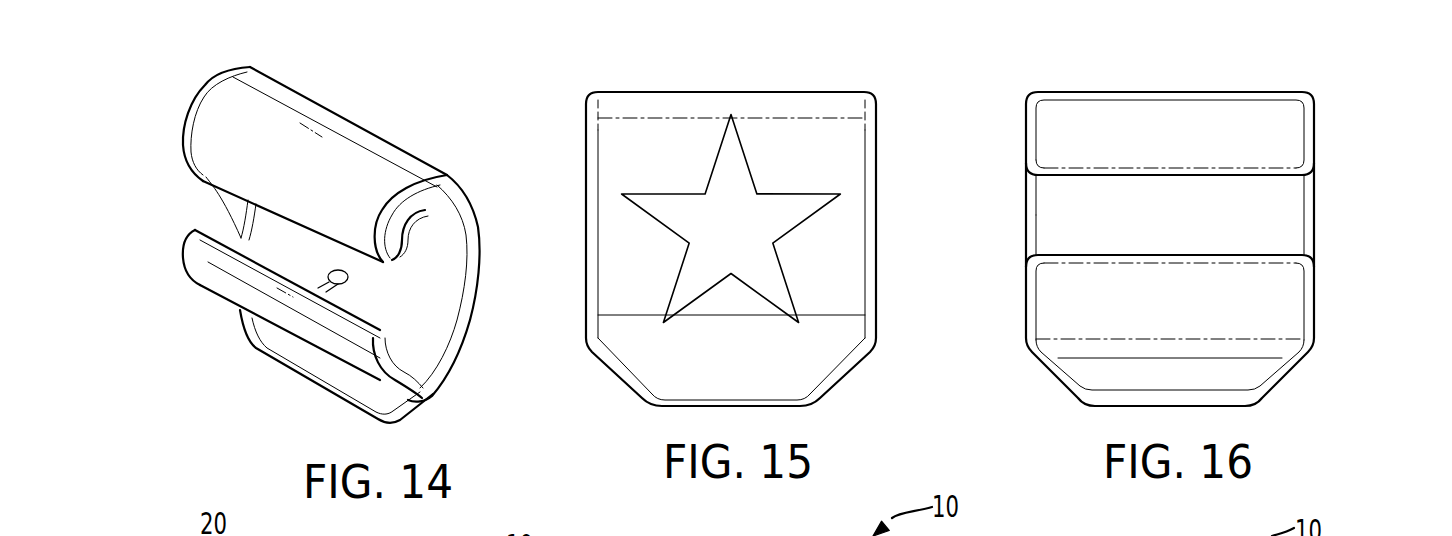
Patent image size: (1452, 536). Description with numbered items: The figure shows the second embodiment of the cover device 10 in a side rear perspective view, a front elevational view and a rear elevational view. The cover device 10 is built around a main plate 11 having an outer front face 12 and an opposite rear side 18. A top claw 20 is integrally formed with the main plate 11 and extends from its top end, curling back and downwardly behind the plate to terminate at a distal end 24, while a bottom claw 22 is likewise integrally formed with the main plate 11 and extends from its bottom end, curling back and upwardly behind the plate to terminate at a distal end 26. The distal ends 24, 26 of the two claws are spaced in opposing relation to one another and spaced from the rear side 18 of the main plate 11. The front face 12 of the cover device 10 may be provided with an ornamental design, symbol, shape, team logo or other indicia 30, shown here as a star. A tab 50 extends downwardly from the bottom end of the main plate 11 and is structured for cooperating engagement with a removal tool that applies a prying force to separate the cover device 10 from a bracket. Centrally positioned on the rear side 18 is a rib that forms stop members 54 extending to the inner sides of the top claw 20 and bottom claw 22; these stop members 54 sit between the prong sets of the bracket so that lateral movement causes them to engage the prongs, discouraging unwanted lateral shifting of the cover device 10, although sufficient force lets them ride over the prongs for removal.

In FIG. 14, the cover device 10 is at (395, 108).
In FIG. 15, the cover device 10 is at (905, 115).
In FIG. 16, the cover device 10 is at (1348, 105).
In FIG. 15, the main plate 11 is at (618, 137).
In FIG. 15, the front face 12 is at (627, 280).
In FIG. 14, the rear side 18 is at (433, 243).
In FIG. 16, the rear side 18 is at (1277, 221).
In FIG. 14, the top claw 20 is at (206, 122).
In FIG. 16, the top claw 20 is at (1287, 148).
In FIG. 14, the bottom claw 22 is at (227, 285).
In FIG. 16, the bottom claw 22 is at (1277, 298).
In FIG. 14, the distal end 24 is at (206, 177).
In FIG. 16, the distal end 24 is at (1081, 176).
In FIG. 14, the distal end 26 is at (221, 238).
In FIG. 16, the distal end 26 is at (1084, 257).
In FIG. 15, the indicia 30 is at (773, 203).
In FIG. 14, the tab 50 is at (308, 383).
In FIG. 15, the tab 50 is at (823, 365).
In FIG. 16, the tab 50 is at (1235, 383).
In FIG. 14, the stop member 54 is at (318, 286).